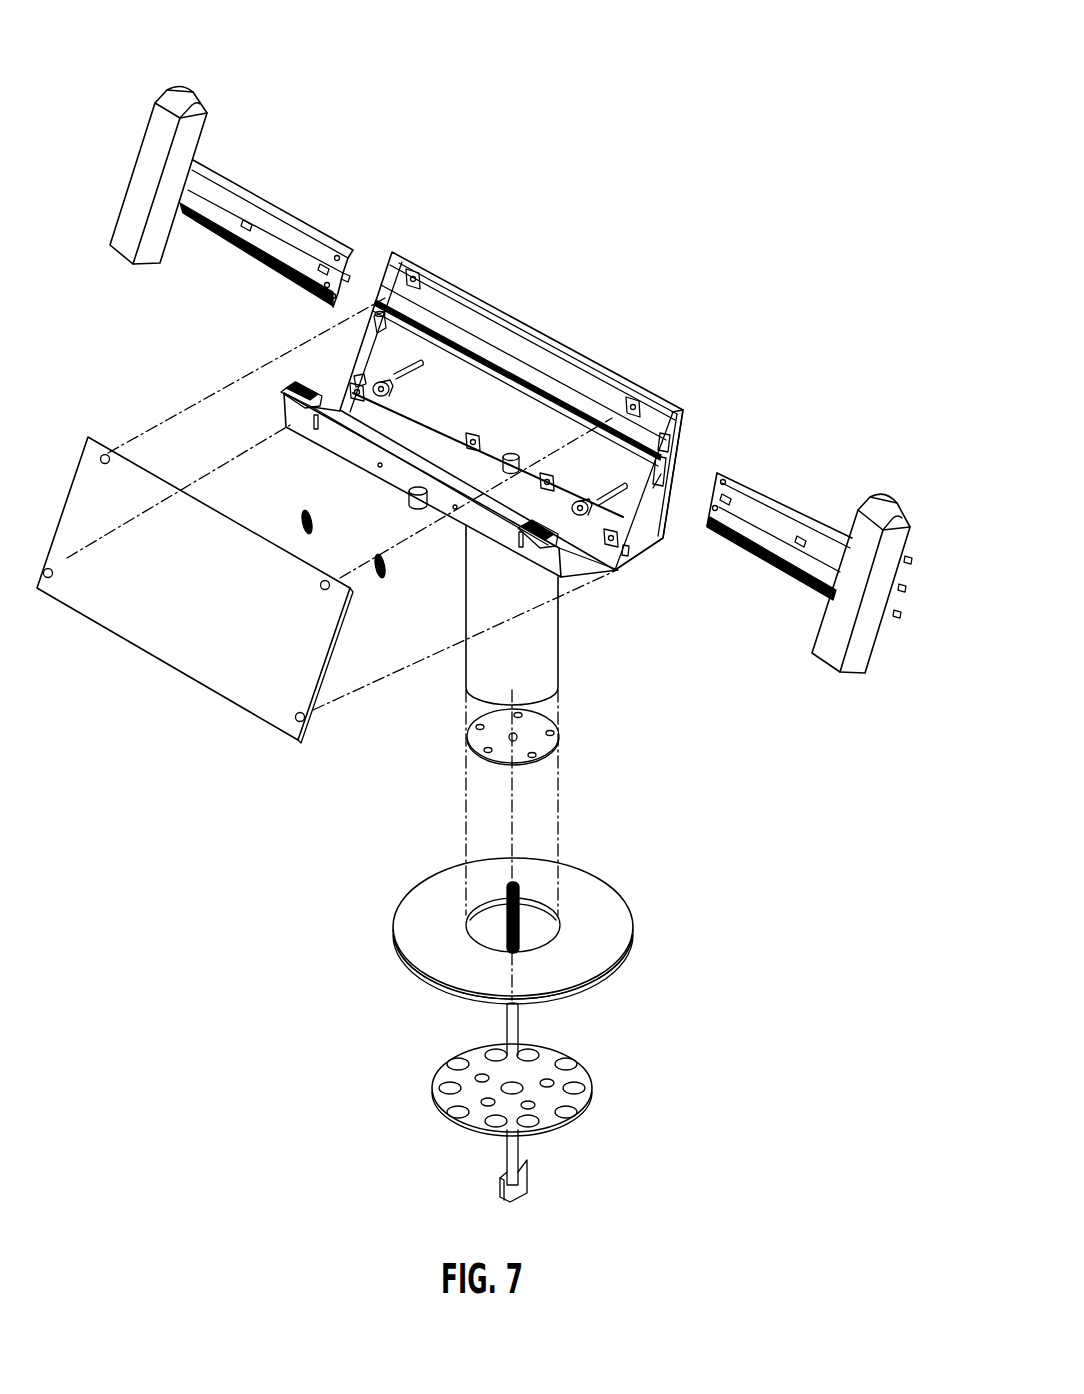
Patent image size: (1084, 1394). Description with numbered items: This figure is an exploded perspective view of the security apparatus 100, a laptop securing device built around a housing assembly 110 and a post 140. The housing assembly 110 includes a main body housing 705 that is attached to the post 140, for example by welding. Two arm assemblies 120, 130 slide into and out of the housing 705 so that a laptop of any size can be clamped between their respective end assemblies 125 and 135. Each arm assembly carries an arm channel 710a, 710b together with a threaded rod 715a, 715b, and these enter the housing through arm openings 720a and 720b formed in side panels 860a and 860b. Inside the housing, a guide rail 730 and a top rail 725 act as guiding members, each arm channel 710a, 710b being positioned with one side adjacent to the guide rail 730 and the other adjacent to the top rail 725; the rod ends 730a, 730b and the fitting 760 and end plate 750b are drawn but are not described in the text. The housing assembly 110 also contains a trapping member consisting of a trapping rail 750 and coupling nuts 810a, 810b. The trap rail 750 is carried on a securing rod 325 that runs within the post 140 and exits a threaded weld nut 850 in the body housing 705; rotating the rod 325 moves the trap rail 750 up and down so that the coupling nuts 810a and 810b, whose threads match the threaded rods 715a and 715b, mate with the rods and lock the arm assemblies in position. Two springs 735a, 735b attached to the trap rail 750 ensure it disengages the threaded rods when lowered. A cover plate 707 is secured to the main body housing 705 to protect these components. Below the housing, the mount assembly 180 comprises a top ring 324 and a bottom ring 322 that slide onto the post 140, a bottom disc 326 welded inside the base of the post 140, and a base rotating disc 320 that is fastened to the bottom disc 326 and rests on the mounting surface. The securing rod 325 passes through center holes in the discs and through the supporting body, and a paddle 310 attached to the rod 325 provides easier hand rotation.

The security apparatus 100 is at (667, 272).
The housing assembly 110 is at (669, 377).
The arm assembly 120 is at (844, 460).
The end assembly 125 is at (929, 549).
The arm assembly 130 is at (300, 200).
The end assembly 135 is at (217, 82).
The post 140 is at (548, 630).
The mount assembly 180 is at (639, 887).
The paddle 310 is at (528, 1186).
The base rotating disc 320 is at (588, 1090).
The bottom ring 322 is at (614, 972).
The top ring 324 is at (626, 930).
The securing rod 325 is at (520, 1024).
The bottom disc 326 is at (562, 746).
The main body housing 705 is at (458, 292).
The cover plate 707 is at (126, 462).
The arm channel 710a is at (333, 236).
The arm channel 710b is at (746, 476).
The threaded rod 715a is at (278, 278).
The threaded rod 715b is at (748, 548).
The arm opening 720a is at (378, 330).
The arm opening 720b is at (660, 463).
The top rail 725 is at (515, 358).
The guide rail 730 is at (479, 372).
The left rod bushing 730a is at (382, 402).
The right rod bushing 730b is at (575, 508).
The spring 735a is at (310, 518).
The spring 735b is at (388, 555).
The trapping rail 750 is at (342, 450).
The right end plate 750b is at (682, 432).
The spacer 760 is at (413, 510).
The coupling nut 810a is at (283, 396).
The coupling nut 810b is at (534, 542).
The weld nut 850 is at (514, 456).
The side panel 860a is at (360, 386).
The side panel 860b is at (638, 532).